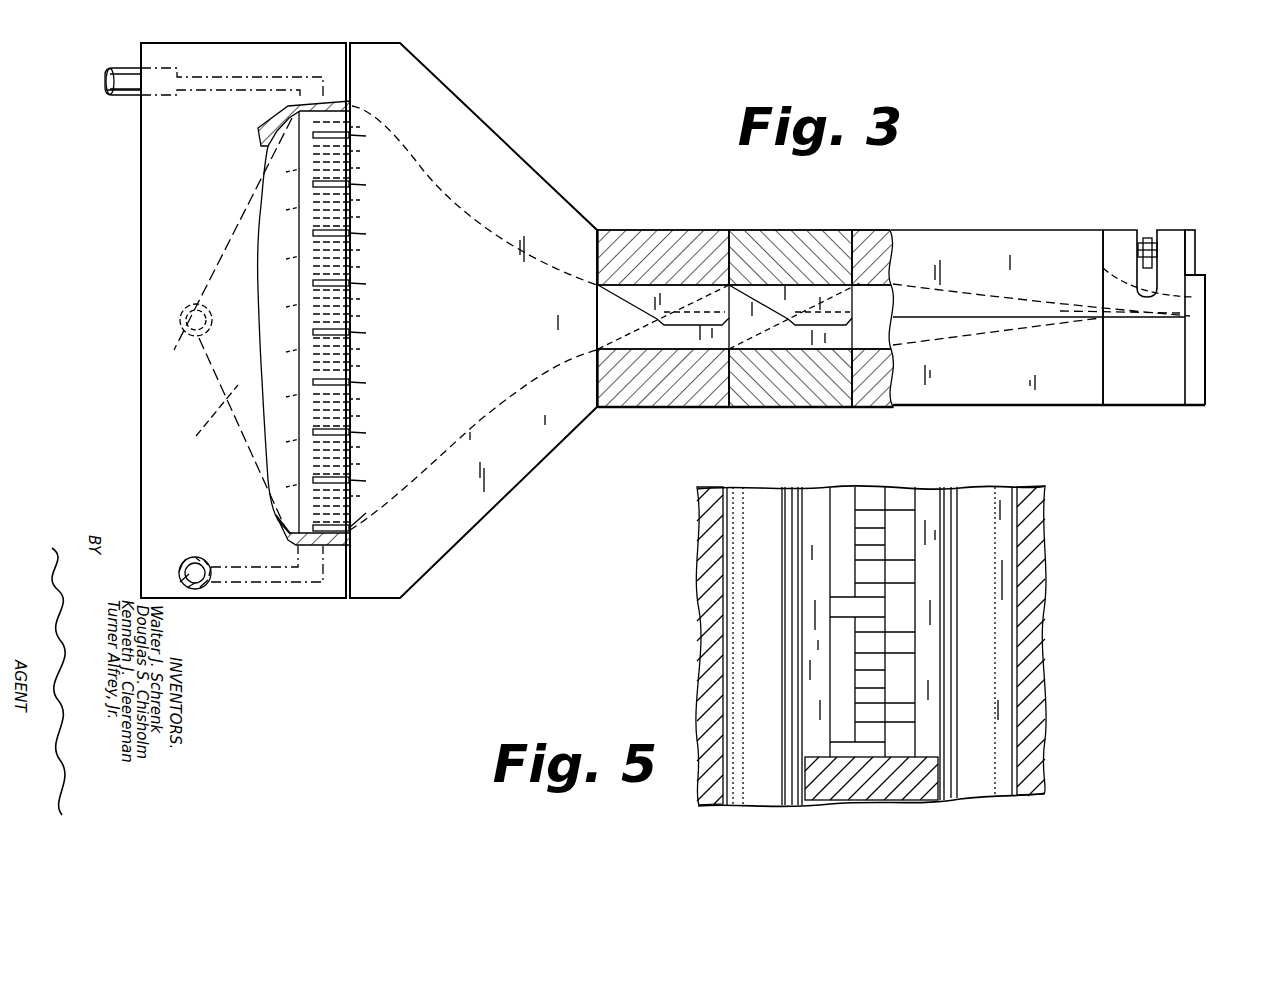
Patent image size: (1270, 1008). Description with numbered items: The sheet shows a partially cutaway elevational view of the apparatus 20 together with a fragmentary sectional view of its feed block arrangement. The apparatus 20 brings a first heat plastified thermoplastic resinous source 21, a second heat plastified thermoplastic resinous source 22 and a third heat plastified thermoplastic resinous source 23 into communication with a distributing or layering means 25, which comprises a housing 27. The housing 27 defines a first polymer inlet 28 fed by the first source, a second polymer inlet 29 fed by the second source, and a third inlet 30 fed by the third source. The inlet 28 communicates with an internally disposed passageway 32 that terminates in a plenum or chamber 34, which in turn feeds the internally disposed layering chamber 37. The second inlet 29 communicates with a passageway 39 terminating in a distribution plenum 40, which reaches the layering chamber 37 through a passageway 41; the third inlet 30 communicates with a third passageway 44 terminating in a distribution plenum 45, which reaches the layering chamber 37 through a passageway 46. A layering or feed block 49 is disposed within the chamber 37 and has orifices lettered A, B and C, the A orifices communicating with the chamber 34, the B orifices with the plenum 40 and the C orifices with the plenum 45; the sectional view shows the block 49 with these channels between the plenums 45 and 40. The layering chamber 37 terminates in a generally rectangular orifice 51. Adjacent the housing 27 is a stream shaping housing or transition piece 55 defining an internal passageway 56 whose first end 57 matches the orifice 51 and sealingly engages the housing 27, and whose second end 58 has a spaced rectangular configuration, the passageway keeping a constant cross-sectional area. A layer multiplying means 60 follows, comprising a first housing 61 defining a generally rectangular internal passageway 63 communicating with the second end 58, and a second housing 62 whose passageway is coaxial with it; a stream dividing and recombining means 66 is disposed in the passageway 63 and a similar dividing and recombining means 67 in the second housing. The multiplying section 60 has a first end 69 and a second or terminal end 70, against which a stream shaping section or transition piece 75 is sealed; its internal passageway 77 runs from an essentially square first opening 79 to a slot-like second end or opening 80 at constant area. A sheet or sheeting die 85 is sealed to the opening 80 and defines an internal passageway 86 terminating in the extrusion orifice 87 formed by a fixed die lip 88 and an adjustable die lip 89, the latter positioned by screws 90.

In FIG. 3, the apparatus 20 is at (678, 222).
In FIG. 3, the first heat plastified thermoplastic resinous source 21 is at (222, 321).
In FIG. 3, the second heat plastified thermoplastic resinous source 22 is at (112, 70).
In FIG. 3, the third heat plastified thermoplastic resinous source 23 is at (200, 592).
In FIG. 3, the distributing or layering means 25 is at (290, 42).
In FIG. 3, the housing 27 is at (212, 43).
In FIG. 5, the housing 27 is at (700, 561).
In FIG. 3, the first polymer inlet 28 is at (188, 305).
In FIG. 3, the second polymer inlet 29 is at (140, 97).
In FIG. 3, the third inlet 30 is at (203, 592).
In FIG. 3, the internally disposed passageway 32 is at (204, 421).
In FIG. 3, the plenum or chamber 34 is at (290, 294).
In FIG. 3, the layering chamber 37 is at (383, 329).
In FIG. 3, the passageway 39 is at (224, 94).
In FIG. 3, the distribution plenum 40 is at (346, 99).
In FIG. 5, the distribution plenum 40 is at (965, 747).
In FIG. 5, the passageway 41 is at (935, 502).
In FIG. 3, the third passageway 44 is at (281, 582).
In FIG. 5, the distribution plenum 45 is at (752, 749).
In FIG. 5, the passageway 46 is at (818, 510).
In FIG. 5, the layering or feed block 49 is at (873, 487).
In FIG. 3, the generally rectangular orifice 51 is at (382, 238).
In FIG. 3, the stream shaping housing or transition piece 55 is at (505, 163).
In FIG. 3, the internal passageway 56 is at (514, 272).
In FIG. 3, the first end 57 is at (362, 112).
In FIG. 3, the second end 58 is at (580, 360).
In FIG. 3, the layer multiplying means 60 is at (790, 228).
In FIG. 3, the first housing 61 is at (649, 408).
In FIG. 3, the second housing 62 is at (757, 408).
In FIG. 3, the internal passageway 63 is at (860, 232).
In FIG. 3, the stream dividing and recombining means 66 is at (683, 307).
In FIG. 3, the dividing and recombining means 67 is at (780, 307).
In FIG. 3, the first end 69 is at (601, 230).
In FIG. 3, the second or terminal end 70 is at (843, 408).
In FIG. 3, the stream shaping section or transition piece 75 is at (960, 232).
In FIG. 3, the internal passageway 77 is at (984, 322).
In FIG. 3, the first opening 79 is at (860, 344).
In FIG. 3, the second end or opening 80 is at (1094, 317).
In FIG. 3, the sheet or sheeting die 85 is at (1115, 250).
In FIG. 3, the internal passageway 86 is at (1127, 320).
In FIG. 3, the extrusion orifice 87 is at (1198, 318).
In FIG. 3, the fixed die lip 88 is at (1198, 325).
In FIG. 3, the adjustable die lip 89 is at (1198, 303).
In FIG. 3, the screws 90 is at (1148, 237).